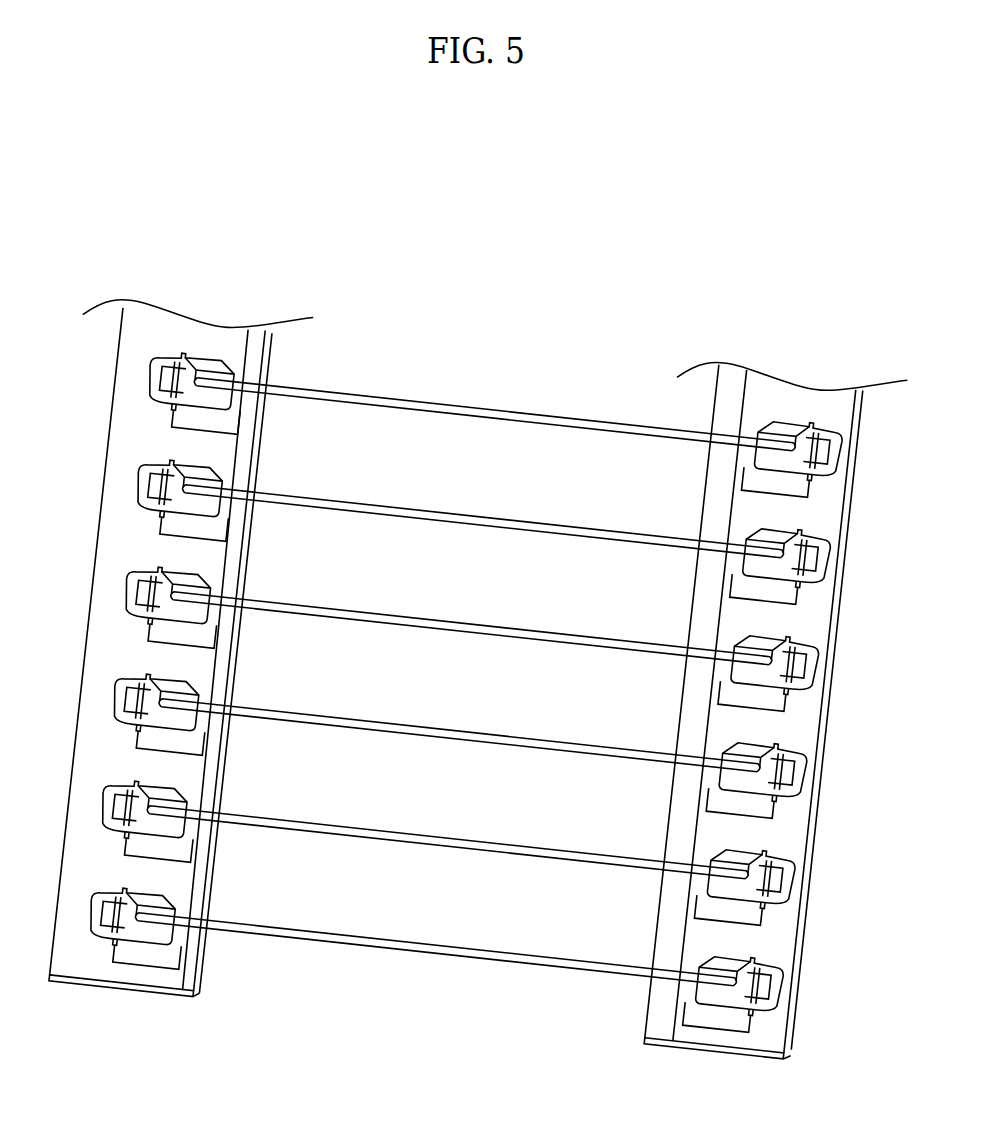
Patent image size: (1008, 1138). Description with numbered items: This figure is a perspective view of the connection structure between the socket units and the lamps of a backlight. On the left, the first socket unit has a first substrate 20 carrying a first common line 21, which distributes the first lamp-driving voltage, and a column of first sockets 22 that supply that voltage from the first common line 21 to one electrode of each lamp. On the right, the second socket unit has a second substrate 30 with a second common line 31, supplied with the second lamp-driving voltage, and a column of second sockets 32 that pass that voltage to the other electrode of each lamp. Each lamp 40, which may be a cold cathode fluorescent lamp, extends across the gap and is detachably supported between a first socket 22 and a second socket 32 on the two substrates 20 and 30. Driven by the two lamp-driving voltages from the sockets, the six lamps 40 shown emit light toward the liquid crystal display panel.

The first substrate 20 is at (147, 977).
The first common line 21 is at (183, 948).
The first socket 22 is at (105, 928).
The second substrate 30 is at (733, 1040).
The second common line 31 is at (693, 1023).
The second socket 32 is at (775, 975).
The lamp 40 is at (423, 950).